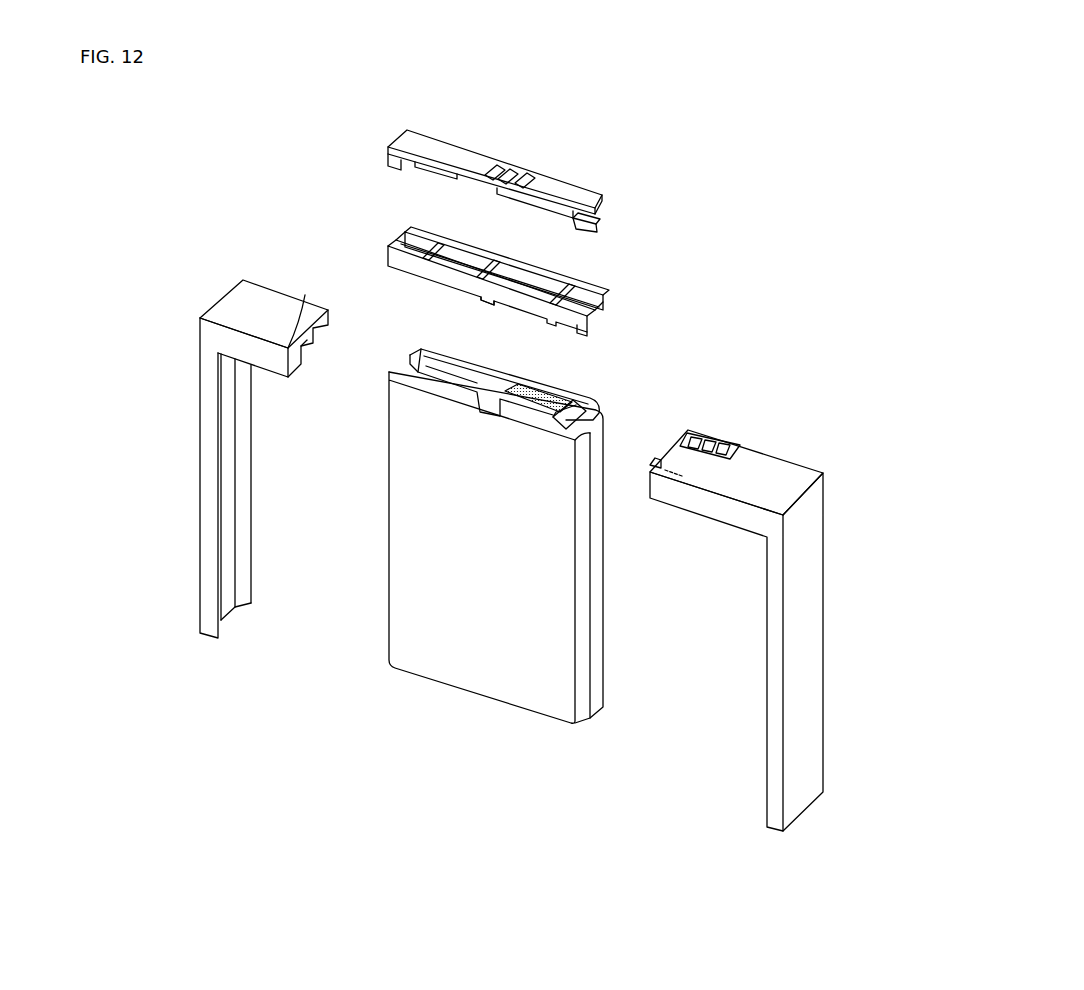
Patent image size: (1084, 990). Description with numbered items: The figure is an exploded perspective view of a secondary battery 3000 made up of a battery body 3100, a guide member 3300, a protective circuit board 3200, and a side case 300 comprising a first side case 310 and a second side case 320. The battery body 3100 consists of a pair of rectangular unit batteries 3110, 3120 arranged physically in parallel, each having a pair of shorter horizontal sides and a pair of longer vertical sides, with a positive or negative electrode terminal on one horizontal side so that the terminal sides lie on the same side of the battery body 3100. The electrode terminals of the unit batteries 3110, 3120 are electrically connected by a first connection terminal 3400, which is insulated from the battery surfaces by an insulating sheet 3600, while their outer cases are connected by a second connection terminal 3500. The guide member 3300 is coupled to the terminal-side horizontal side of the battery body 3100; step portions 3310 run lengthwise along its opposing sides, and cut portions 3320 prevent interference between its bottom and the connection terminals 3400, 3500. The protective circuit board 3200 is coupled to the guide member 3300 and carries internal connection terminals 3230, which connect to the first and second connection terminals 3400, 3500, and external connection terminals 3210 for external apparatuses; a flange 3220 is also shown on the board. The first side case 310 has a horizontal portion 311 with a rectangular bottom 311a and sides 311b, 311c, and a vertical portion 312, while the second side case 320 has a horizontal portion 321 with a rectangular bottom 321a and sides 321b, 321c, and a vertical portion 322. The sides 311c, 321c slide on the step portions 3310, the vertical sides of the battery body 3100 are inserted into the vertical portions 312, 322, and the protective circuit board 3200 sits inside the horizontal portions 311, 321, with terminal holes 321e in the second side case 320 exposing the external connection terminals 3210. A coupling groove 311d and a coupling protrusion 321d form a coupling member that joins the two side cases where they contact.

The secondary battery 3000 is at (767, 119).
The protective circuit board 3200 is at (452, 142).
The external connection terminals 3210 is at (512, 168).
The flange 3220 is at (428, 171).
The internal connection terminals 3230 is at (387, 162).
The guide member 3300 is at (392, 259).
The step portions 3310 is at (390, 247).
The cut portions 3320 is at (487, 293).
The battery body 3100 is at (406, 681).
The unit battery 3110 is at (509, 698).
The unit battery 3120 is at (598, 672).
The first connection terminal 3400 is at (478, 378).
The second connection terminal 3500 is at (575, 408).
The insulating sheet 3600 is at (543, 395).
The side case 300 is at (886, 468).
The first side case 310 is at (188, 487).
The horizontal portion 311 is at (210, 218).
The bottom 311a is at (225, 315).
The side 311b is at (227, 343).
The side 311c is at (297, 330).
The coupling groove 311d is at (225, 317).
The vertical portion 312 is at (203, 592).
The second side case 320 is at (836, 616).
The horizontal portion 321 is at (873, 397).
The bottom 321a is at (780, 470).
The side 321b is at (823, 470).
The side 321c is at (688, 442).
The coupling protrusion 321d is at (658, 458).
The terminal holes 321e is at (727, 443).
The vertical portion 322 is at (817, 718).